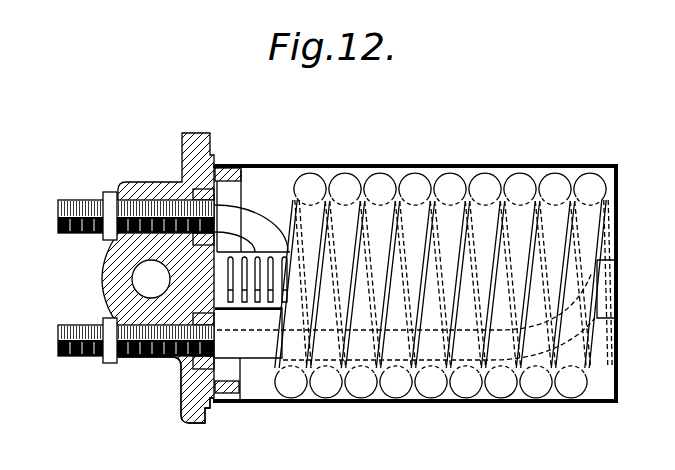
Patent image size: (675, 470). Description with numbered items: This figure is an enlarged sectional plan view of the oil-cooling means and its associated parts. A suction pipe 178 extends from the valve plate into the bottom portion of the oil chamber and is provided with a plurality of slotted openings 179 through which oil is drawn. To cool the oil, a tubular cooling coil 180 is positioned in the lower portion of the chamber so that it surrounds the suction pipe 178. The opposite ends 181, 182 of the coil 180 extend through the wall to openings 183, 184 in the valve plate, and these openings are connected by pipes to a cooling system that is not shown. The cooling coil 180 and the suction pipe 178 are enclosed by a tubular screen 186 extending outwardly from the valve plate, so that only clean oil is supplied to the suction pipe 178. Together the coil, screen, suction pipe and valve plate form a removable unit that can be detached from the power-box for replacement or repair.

The suction pipe 178 is at (256, 248).
The slotted openings 179 is at (266, 304).
The tubular cooling coil 180 is at (394, 388).
The end of the coil 181 is at (80, 233).
The end of the coil 182 is at (80, 357).
The opening in the valve plate 183 is at (156, 178).
The opening in the valve plate 184 is at (132, 374).
The tubular screen 186 is at (517, 403).